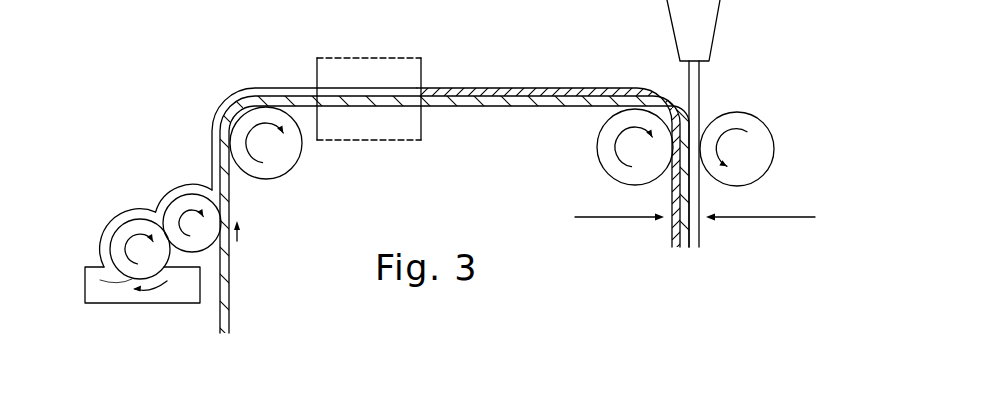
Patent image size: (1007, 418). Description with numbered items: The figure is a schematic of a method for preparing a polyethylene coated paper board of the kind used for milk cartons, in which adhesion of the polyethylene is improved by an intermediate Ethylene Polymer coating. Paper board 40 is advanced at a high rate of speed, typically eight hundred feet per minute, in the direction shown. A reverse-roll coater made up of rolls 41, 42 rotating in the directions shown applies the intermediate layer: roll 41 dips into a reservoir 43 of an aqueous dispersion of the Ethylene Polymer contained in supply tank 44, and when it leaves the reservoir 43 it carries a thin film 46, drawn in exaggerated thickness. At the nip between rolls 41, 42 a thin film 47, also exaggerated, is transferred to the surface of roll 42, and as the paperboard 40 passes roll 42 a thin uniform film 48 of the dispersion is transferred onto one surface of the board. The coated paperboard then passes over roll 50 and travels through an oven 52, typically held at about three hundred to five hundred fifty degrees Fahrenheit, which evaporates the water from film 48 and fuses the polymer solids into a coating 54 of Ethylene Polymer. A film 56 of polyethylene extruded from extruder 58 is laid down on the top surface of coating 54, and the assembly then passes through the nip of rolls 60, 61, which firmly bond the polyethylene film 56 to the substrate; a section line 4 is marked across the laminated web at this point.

The section line 4- 4 is at (695, 217).
The paper board 40 is at (229, 328).
The roll 41 is at (160, 257).
The roll 42 is at (210, 220).
The reservoir 43 is at (100, 265).
The supply tank 44 is at (107, 298).
The thin film 46 is at (115, 222).
The thin film 47 is at (171, 188).
The uniform film 48 is at (209, 145).
The roll 50 is at (302, 162).
The oven 52 is at (383, 58).
The coating 54 is at (522, 87).
The film of polyethylene 56 is at (700, 82).
The extruder 58 is at (722, 12).
The roll 60 is at (597, 147).
The roll 61 is at (775, 147).